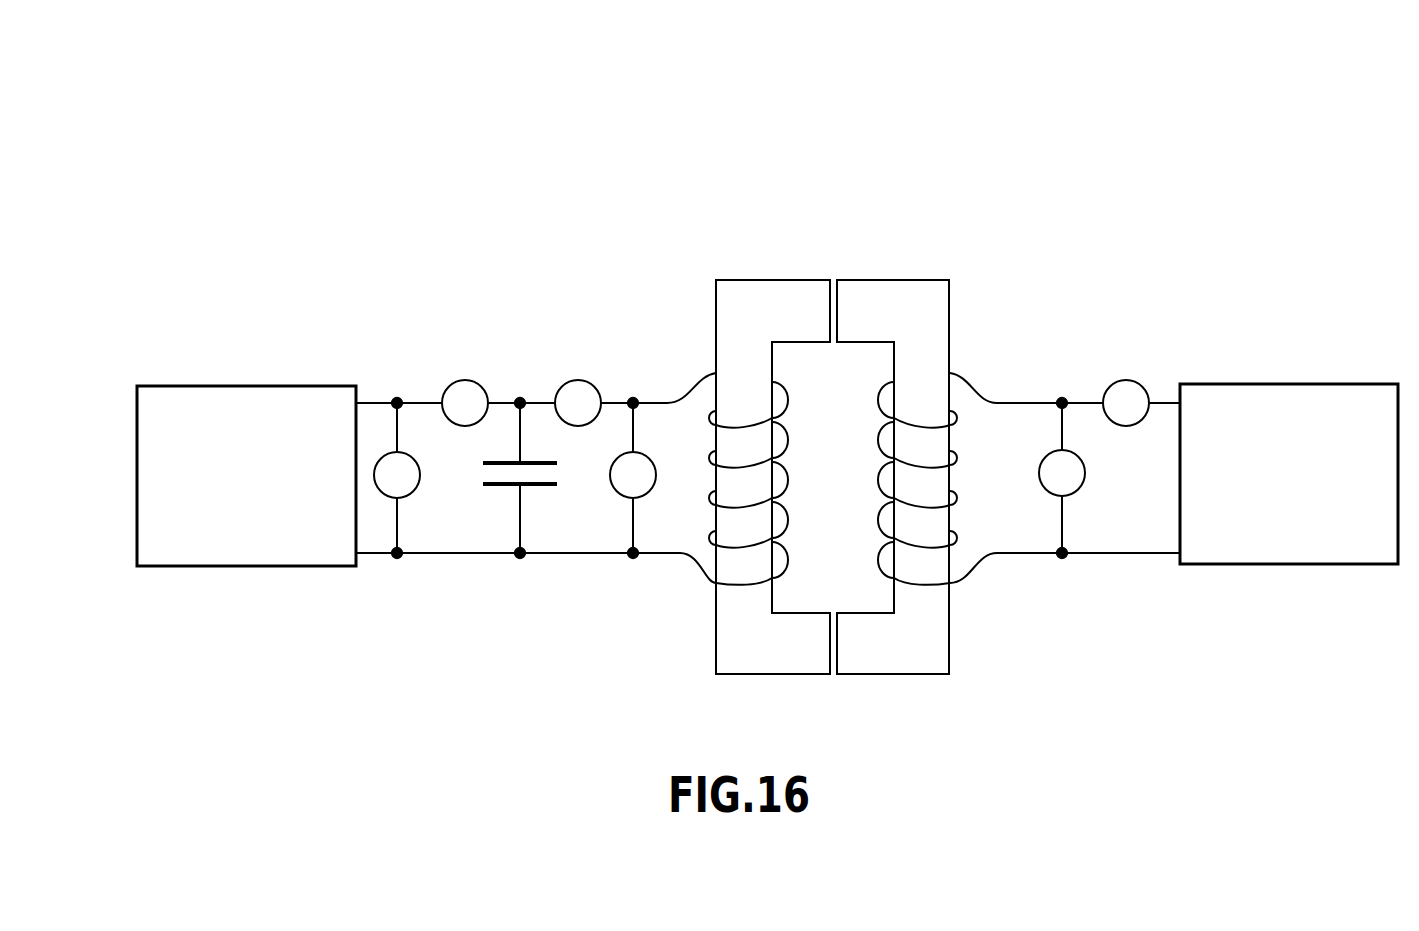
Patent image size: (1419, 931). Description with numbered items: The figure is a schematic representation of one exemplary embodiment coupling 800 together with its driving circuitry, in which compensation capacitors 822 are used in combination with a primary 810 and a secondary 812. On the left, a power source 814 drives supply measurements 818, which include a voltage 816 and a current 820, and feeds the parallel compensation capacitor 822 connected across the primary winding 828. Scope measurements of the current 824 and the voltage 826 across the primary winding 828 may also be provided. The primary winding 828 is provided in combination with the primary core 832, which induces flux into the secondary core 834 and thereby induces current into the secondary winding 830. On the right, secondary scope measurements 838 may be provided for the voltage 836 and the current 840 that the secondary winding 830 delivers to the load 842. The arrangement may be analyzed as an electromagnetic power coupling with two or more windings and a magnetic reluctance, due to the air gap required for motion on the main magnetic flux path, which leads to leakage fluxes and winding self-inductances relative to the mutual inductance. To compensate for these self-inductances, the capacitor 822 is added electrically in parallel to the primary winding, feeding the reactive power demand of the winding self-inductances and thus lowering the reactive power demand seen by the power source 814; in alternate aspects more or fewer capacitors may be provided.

The coupling 800 is at (1158, 98).
The primary 810 is at (733, 262).
The secondary 812 is at (918, 262).
The power source 814 is at (207, 567).
The voltage 816 is at (412, 495).
The supply measurements 818 is at (429, 428).
The current 820 is at (481, 384).
The compensation capacitor 822 is at (538, 486).
The current 824 is at (593, 384).
The voltage 826 is at (648, 495).
The primary winding 828 is at (755, 588).
The secondary winding 830 is at (928, 588).
The primary core 832 is at (798, 655).
The secondary core 834 is at (870, 655).
The voltage 836 is at (1047, 493).
The secondary scope measurements 838 is at (1112, 495).
The current 840 is at (1140, 383).
The load 842 is at (1348, 385).